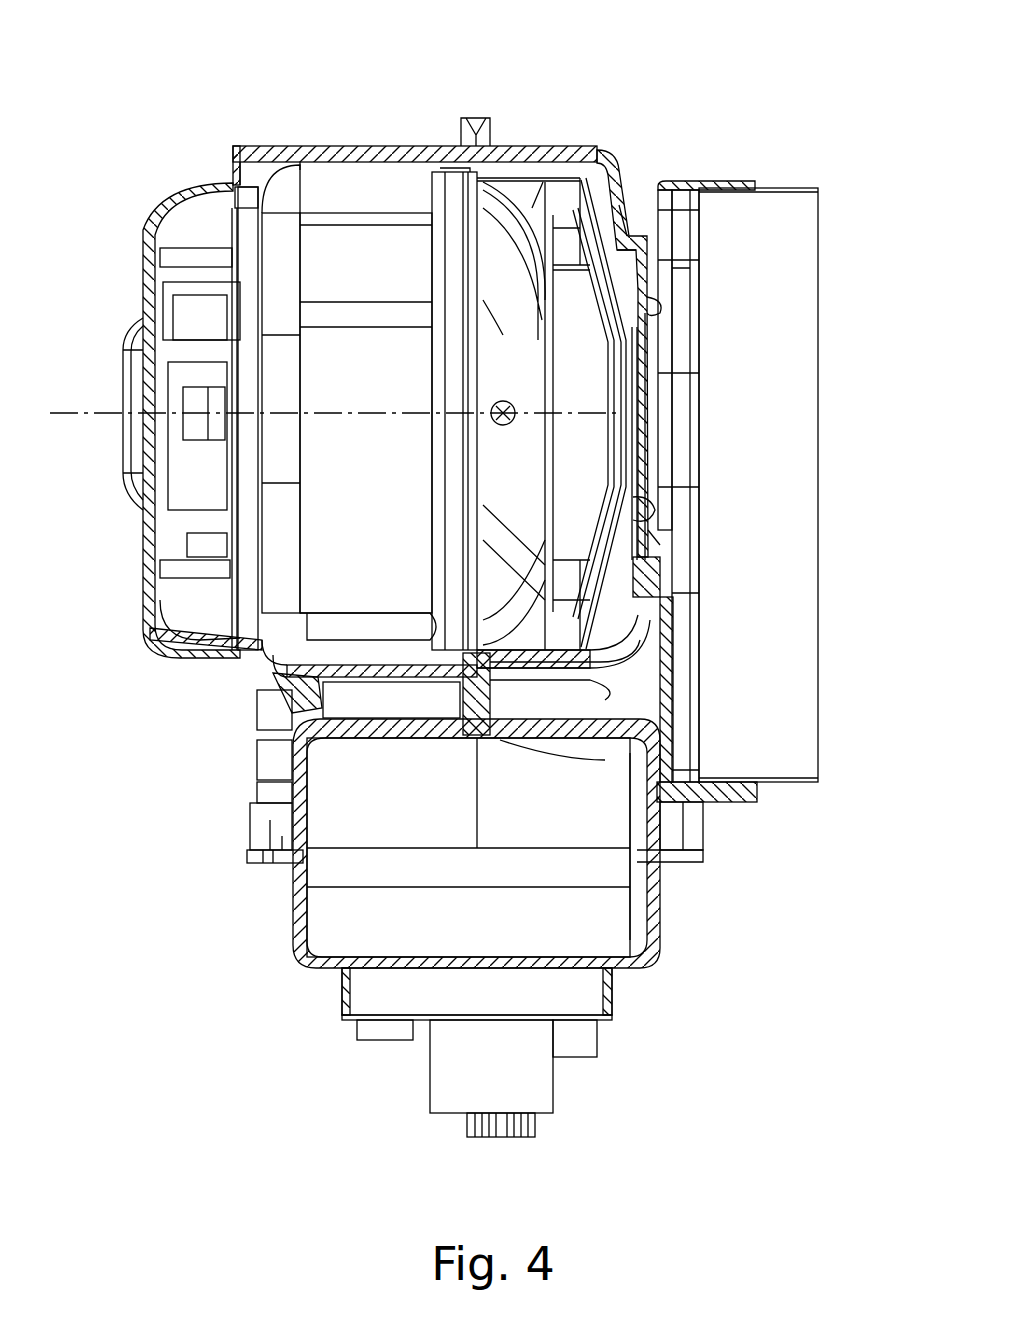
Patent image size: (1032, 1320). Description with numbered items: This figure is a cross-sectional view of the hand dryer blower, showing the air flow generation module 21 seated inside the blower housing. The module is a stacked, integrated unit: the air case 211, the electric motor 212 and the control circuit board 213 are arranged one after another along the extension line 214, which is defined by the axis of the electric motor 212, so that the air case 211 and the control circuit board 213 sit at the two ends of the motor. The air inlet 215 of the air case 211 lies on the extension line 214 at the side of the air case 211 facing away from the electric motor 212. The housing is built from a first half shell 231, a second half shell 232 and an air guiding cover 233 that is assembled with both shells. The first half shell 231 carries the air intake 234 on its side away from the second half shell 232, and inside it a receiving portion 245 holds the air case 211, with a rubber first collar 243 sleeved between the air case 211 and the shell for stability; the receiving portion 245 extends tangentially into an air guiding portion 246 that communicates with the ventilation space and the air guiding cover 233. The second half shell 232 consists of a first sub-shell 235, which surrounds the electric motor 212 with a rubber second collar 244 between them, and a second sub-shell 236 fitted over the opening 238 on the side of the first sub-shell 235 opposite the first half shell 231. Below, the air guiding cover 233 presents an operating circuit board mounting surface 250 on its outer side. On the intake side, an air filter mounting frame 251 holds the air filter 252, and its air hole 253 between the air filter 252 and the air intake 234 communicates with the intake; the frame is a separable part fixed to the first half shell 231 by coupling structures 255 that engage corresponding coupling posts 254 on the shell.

The air flow generation module 21 is at (333, 195).
The air case 211 is at (600, 150).
The electric motor 212 is at (400, 215).
The control circuit board 213 is at (215, 215).
The extension line 214 is at (80, 412).
The air inlet 215 is at (632, 345).
The first half shell 231 is at (505, 136).
The second half shell 232 is at (306, 136).
The air guiding cover 233 is at (298, 905).
The air intake 234 is at (652, 510).
The first sub-shell 235 is at (376, 160).
The second sub-shell 236 is at (150, 262).
The opening 238 is at (185, 638).
The first collar 243 is at (545, 180).
The second collar 244 is at (255, 190).
The receiving portion 245 is at (567, 670).
The air guiding portion 246 is at (583, 810).
The operating circuit board mounting surface 250 is at (346, 1020).
The air filter mounting frame 251 is at (742, 182).
The air filter 252 is at (790, 376).
The air hole 253 is at (650, 265).
The coupling posts 254 is at (631, 212).
The coupling structures 255 is at (690, 182).